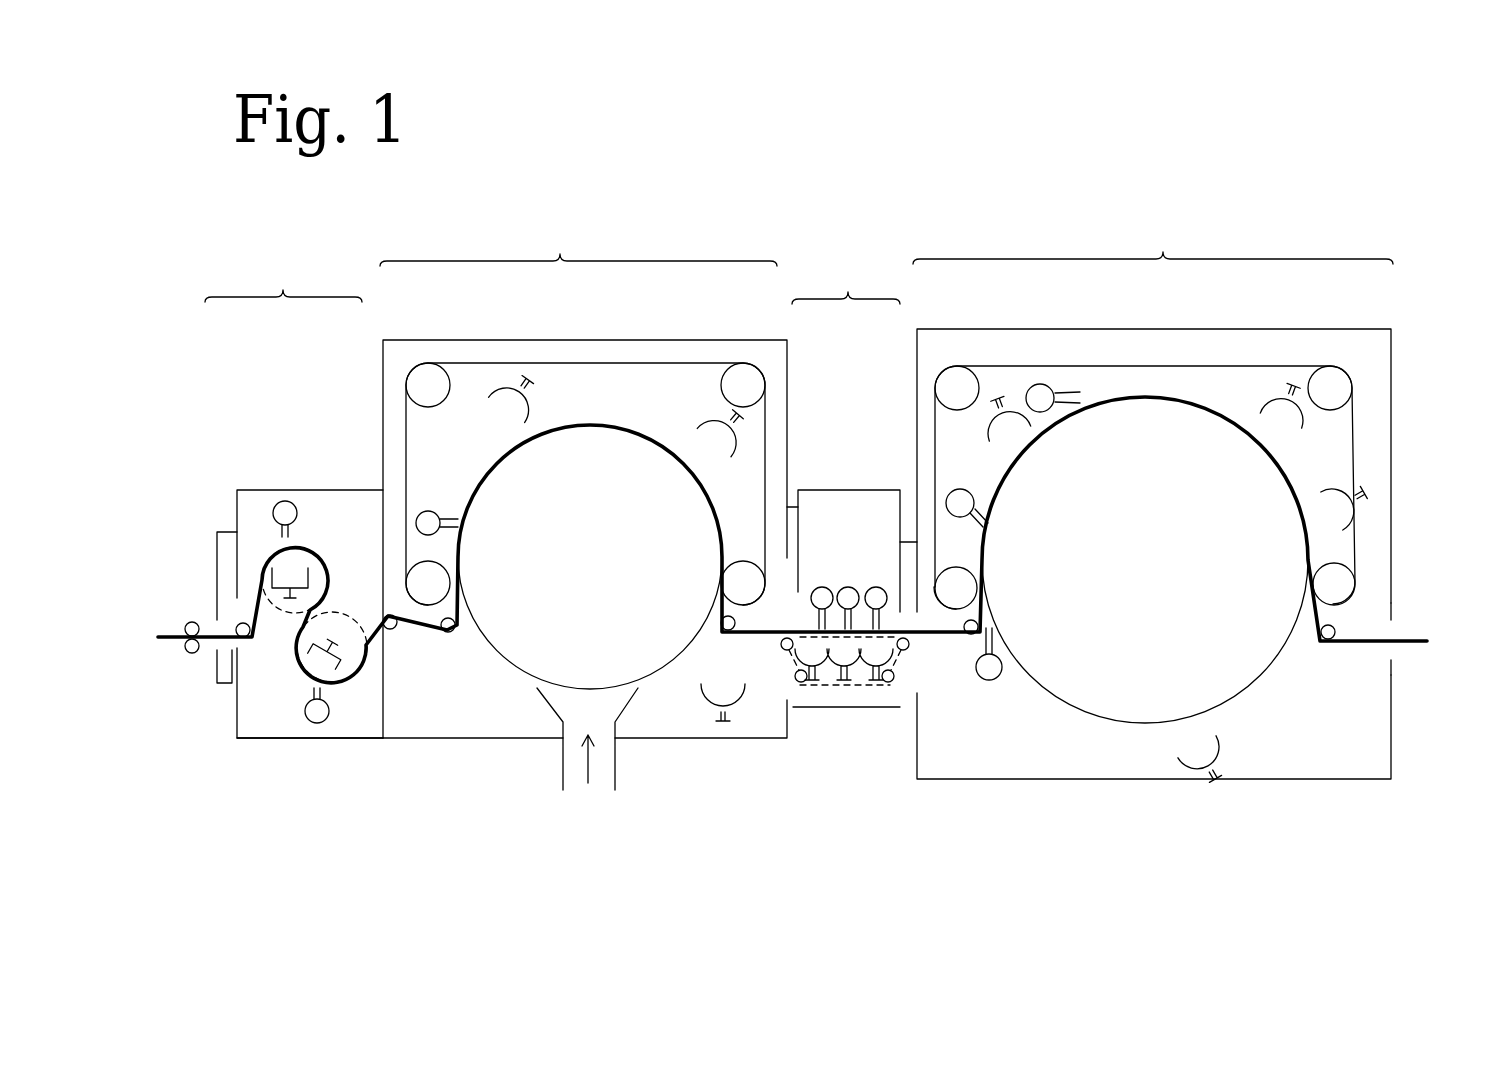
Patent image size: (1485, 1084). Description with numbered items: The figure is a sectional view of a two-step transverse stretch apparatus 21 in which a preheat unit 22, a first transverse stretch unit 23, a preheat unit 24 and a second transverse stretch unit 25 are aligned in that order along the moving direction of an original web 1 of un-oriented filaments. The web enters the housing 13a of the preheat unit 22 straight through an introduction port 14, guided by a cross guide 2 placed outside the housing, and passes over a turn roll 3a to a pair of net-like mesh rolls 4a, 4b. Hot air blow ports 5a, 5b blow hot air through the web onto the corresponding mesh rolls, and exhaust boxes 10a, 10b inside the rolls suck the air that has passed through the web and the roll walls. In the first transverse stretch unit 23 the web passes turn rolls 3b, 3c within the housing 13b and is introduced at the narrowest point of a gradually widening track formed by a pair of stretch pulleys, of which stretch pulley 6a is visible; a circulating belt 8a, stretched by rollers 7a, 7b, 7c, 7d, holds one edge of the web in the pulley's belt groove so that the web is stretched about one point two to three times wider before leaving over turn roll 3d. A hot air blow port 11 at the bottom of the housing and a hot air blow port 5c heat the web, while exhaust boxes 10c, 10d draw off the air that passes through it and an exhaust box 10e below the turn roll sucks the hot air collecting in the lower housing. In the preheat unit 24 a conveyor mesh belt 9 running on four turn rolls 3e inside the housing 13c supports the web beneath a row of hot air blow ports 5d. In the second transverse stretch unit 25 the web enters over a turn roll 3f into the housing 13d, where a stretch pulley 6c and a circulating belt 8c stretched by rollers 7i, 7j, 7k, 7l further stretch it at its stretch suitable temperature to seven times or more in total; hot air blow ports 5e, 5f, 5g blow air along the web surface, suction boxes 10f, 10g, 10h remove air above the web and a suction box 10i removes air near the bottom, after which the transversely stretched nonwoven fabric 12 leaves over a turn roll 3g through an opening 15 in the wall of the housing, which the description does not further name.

The original web 1 is at (178, 625).
The cross guide 2 is at (188, 655).
The turn roll 3a is at (232, 685).
The turn roll 3b is at (392, 632).
The turn roll 3c is at (450, 633).
The turn roll 3d is at (736, 622).
The turn rolls 3e is at (801, 682).
The turn roll 3f is at (970, 636).
The turn roll 3g is at (1328, 648).
The mesh roll 4a is at (280, 612).
The mesh roll 4b is at (370, 662).
The hot air blow port 5a is at (287, 512).
The hot air blow port 5b is at (318, 723).
The hot air blow port 5c is at (428, 516).
The hot air blow ports 5d is at (848, 587).
The hot air blow port 5e is at (998, 675).
The hot air blow port 5f is at (955, 500).
The hot air blow port 5g is at (1038, 384).
The stretch pulley 6a is at (527, 658).
The stretch pulley 6c is at (1118, 712).
The roller 7a is at (420, 585).
The roller 7b is at (428, 380).
The roller 7c is at (744, 378).
The roller 7d is at (742, 575).
The roller 7i is at (953, 603).
The roller 7j is at (945, 378).
The roller 7k is at (1340, 392).
The roller 7l is at (1345, 590).
The circulating belt 8a is at (482, 363).
The circulating belt 8c is at (1135, 365).
The conveyor mesh belt 9 is at (850, 710).
The exhaust box 10a is at (282, 584).
The exhaust box 10b is at (312, 662).
The exhaust box 10c is at (542, 398).
The exhaust box 10d is at (703, 424).
The exhaust box 10e is at (718, 710).
The suction box 10f is at (990, 434).
The suction box 10g is at (1274, 428).
The suction box 10h is at (1333, 537).
The suction box 10i is at (1192, 778).
The hot air blow port 11 is at (617, 775).
The transversely stretched nonwoven fabric 12 is at (1412, 646).
The housing 13a is at (302, 740).
The housing 13b is at (535, 740).
The housing 13c is at (821, 490).
The housing 13d is at (1147, 780).
The introduction port 14 is at (218, 627).
The outlet 15 is at (1383, 622).
The two-step transverse stretch apparatus 21 is at (925, 238).
The preheat unit 22 is at (283, 290).
The first transverse stretch unit 23 is at (560, 260).
The preheat unit 24 is at (848, 294).
The second transverse stretch unit 25 is at (1163, 250).